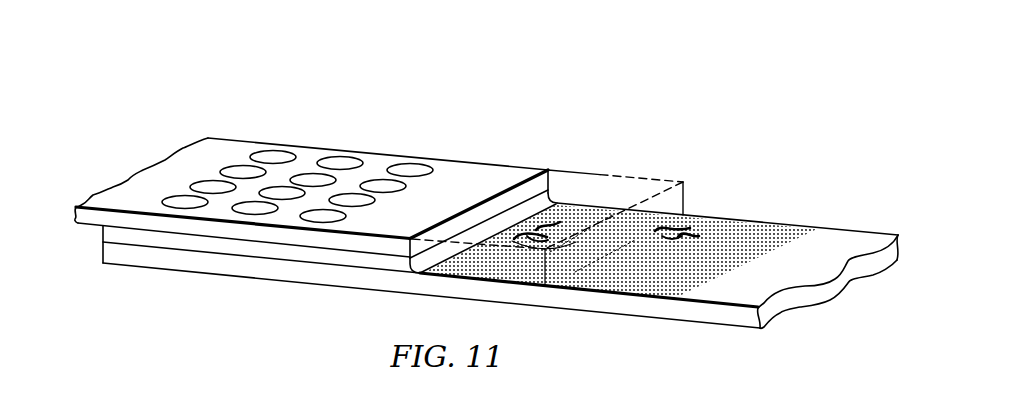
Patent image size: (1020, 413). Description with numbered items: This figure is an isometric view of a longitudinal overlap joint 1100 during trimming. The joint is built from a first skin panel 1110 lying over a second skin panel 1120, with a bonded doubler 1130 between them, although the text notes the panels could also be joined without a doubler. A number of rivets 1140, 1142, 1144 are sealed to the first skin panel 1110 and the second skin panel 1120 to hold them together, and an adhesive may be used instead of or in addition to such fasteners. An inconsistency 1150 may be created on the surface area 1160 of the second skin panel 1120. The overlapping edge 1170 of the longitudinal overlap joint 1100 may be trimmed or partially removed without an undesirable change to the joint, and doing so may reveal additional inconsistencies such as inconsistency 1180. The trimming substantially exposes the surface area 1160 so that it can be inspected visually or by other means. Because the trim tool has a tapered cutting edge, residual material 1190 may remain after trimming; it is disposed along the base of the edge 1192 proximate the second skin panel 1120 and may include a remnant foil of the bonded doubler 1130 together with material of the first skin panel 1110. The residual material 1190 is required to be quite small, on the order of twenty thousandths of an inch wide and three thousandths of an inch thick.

The longitudinal overlap joint 1100 is at (482, 71).
The first skin panel 1110 is at (95, 222).
The second skin panel 1120 is at (245, 268).
The bonded doubler 1130 is at (170, 244).
The rivet 1140 is at (268, 156).
The rivet 1142 is at (336, 162).
The rivet 1144 is at (405, 169).
The inconsistency 1150 is at (699, 232).
The surface area 1160 is at (773, 233).
The overlapping edge 1170 is at (673, 168).
The inconsistency 1180 is at (573, 222).
The residual material 1190 is at (487, 230).
The edge 1192 is at (527, 204).